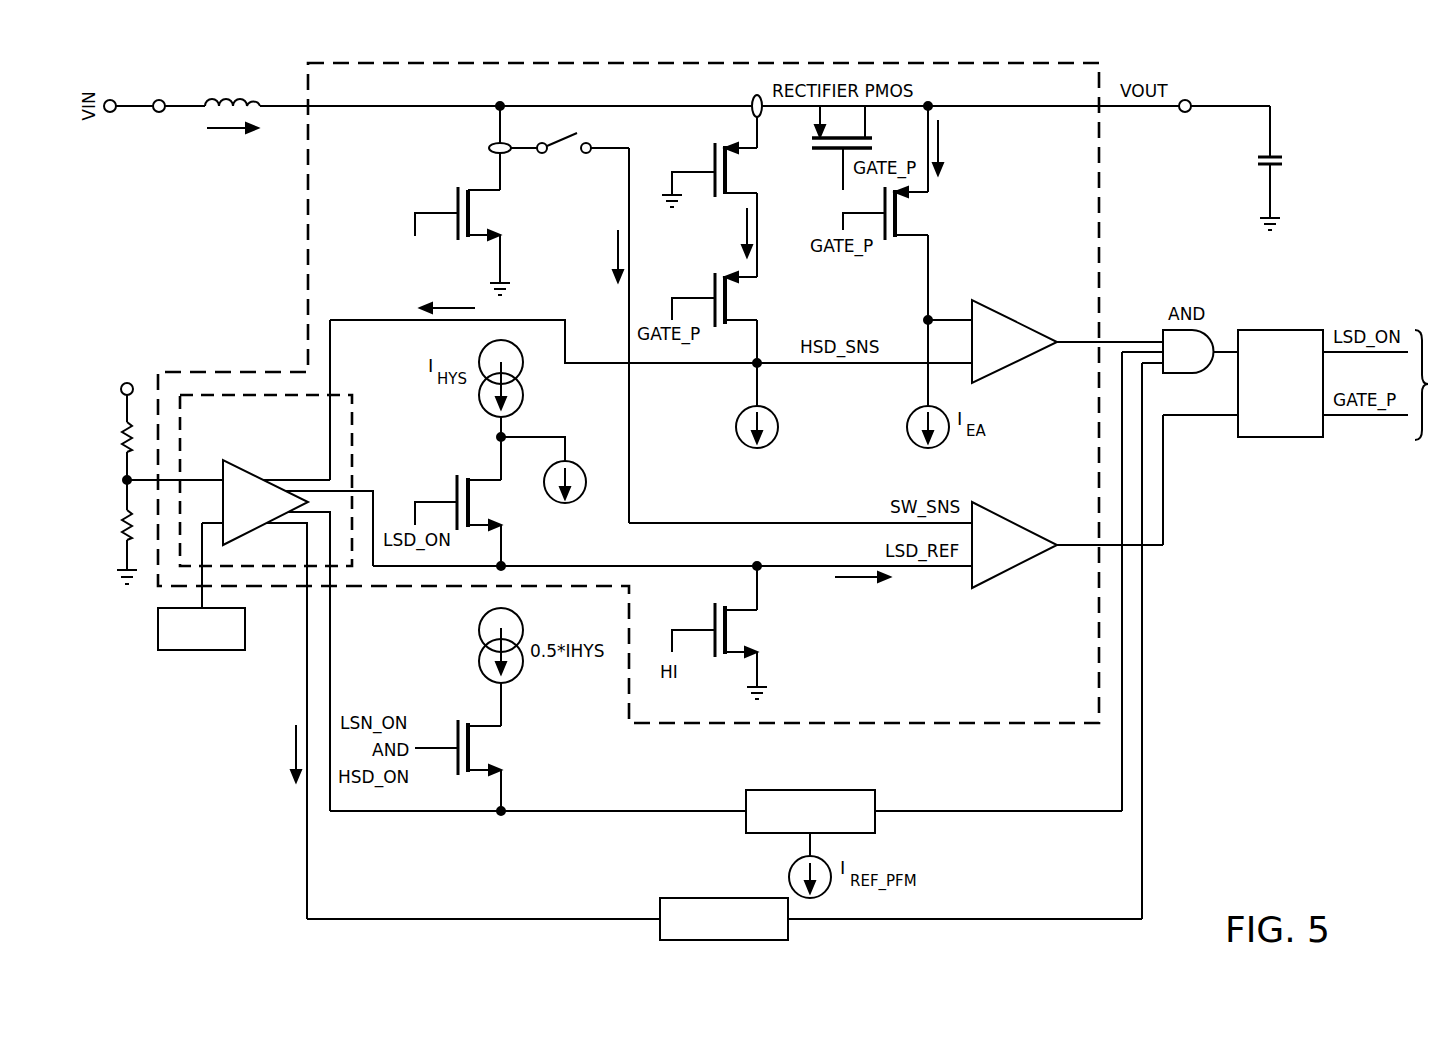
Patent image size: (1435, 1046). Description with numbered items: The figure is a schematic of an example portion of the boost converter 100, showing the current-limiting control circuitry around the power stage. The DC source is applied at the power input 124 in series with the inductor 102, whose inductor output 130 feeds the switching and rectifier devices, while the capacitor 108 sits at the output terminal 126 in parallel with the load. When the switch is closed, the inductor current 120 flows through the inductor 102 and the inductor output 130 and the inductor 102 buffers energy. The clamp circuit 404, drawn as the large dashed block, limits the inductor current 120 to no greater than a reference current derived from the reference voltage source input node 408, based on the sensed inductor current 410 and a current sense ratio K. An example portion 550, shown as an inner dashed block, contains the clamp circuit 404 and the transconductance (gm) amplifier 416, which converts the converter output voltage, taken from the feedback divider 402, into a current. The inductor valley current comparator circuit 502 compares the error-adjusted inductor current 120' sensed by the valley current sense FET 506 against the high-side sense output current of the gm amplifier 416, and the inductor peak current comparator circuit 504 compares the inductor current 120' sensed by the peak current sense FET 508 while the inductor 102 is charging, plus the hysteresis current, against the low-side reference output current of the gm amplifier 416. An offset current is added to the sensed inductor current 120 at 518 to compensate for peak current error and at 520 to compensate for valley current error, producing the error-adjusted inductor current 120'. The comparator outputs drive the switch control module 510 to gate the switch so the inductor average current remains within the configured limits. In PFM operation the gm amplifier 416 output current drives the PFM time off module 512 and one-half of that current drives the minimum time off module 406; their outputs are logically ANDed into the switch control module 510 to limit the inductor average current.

The boost converter 100 is at (1250, 661).
The inductor 102 is at (233, 100).
The capacitor 108 is at (1283, 160).
The inductor current 120 is at (243, 146).
The error-adjusted inductor current 120' is at (619, 470).
The power input 124 is at (158, 114).
The output terminal 126 is at (1193, 112).
The inductor output 130 is at (495, 102).
The feedback resistor divider 402 is at (122, 484).
The clamp circuit 404 is at (300, 265).
The minimum time off module 406 is at (878, 800).
The reference voltage source input node 408 is at (196, 651).
The sensed inductor current 410 is at (490, 150).
The transconductance (gm) amplifier 416 is at (262, 478).
The inductor valley current comparator circuit 502 is at (1010, 368).
The inductor peak current comparator circuit 504 is at (1012, 522).
The valley current sense FET 506 is at (712, 163).
The peak current sense FET 508 is at (456, 203).
The switch control module 510 is at (1310, 330).
The PFM time off module 512 is at (725, 898).
The offset current addition for peak current error 518 is at (576, 462).
The offset current addition for valley current error 520 is at (738, 430).
The example portion of the converter 550 is at (366, 452).